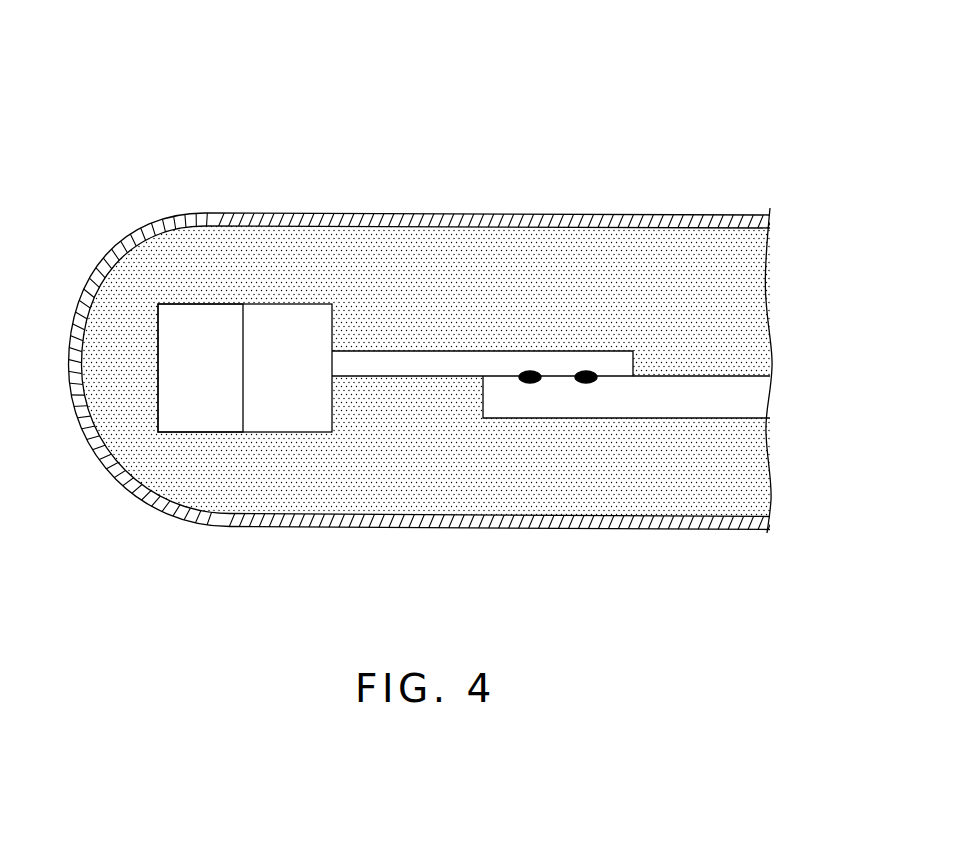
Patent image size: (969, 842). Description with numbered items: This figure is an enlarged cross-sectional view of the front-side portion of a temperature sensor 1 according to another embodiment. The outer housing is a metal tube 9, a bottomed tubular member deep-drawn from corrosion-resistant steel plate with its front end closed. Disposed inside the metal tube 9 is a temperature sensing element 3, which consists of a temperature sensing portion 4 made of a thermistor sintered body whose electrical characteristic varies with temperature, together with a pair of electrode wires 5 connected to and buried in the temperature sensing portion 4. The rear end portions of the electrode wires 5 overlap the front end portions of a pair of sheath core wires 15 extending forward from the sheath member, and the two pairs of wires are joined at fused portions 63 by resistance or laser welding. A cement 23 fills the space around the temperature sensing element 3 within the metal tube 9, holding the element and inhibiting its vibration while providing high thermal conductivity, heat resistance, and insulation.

The temperature sensor 1 is at (426, 316).
The temperature sensing element 3 is at (203, 303).
The temperature sensing portion 4 is at (202, 388).
The electrode wires 5 is at (390, 356).
The metal tube 9 is at (320, 213).
The sheath core wires 15 is at (692, 381).
The cement 23 is at (563, 490).
The fused portions 63 is at (530, 371).